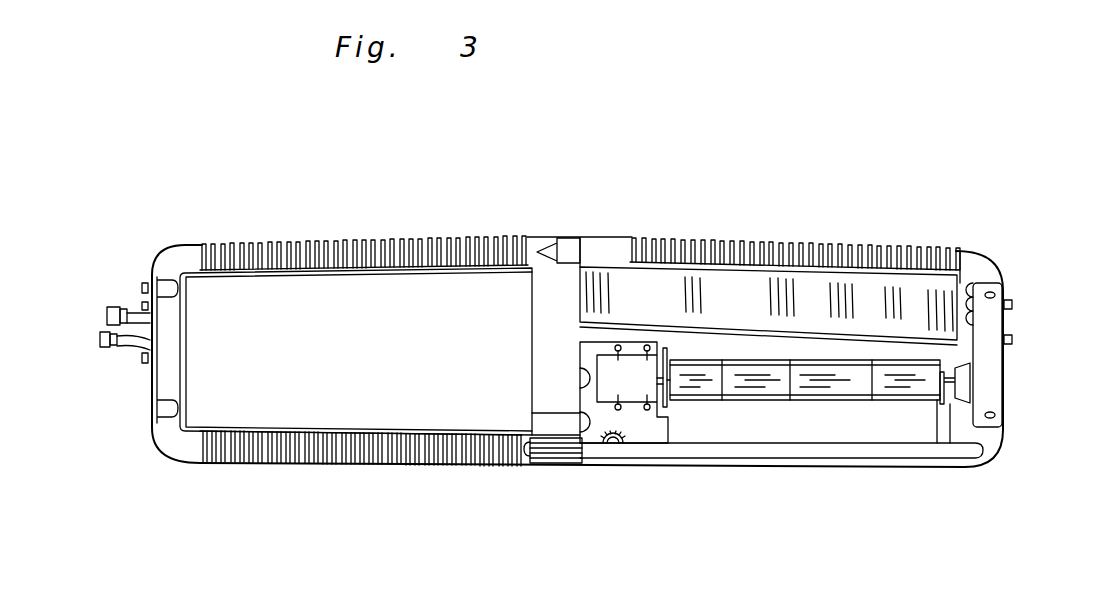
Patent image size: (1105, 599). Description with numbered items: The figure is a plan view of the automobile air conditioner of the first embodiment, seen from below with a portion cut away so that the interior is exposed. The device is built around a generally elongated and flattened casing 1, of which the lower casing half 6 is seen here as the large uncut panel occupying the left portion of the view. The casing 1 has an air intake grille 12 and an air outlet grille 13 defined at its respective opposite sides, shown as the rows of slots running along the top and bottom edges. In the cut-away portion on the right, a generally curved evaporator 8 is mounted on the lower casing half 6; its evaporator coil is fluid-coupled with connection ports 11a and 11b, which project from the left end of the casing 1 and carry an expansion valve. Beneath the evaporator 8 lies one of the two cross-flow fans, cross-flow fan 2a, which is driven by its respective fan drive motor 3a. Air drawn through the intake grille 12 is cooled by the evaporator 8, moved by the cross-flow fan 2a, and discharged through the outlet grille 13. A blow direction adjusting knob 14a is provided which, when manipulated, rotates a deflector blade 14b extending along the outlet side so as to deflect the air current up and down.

The casing 1 is at (955, 350).
The cross-flow fan 2a is at (758, 380).
The fan drive motor 3a is at (630, 387).
The lower casing half 6 is at (452, 305).
The evaporator 8 is at (808, 290).
The connection port 11a is at (105, 313).
The connection port 11b is at (100, 343).
The air intake grille 12 is at (378, 247).
The air outlet grille 13 is at (392, 467).
The blow direction adjusting knob 14a is at (527, 467).
The deflector blade 14b is at (880, 450).